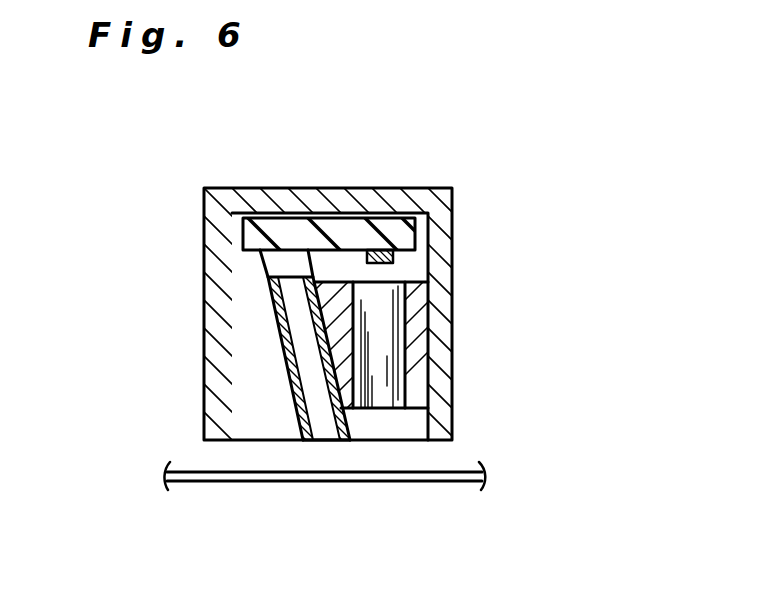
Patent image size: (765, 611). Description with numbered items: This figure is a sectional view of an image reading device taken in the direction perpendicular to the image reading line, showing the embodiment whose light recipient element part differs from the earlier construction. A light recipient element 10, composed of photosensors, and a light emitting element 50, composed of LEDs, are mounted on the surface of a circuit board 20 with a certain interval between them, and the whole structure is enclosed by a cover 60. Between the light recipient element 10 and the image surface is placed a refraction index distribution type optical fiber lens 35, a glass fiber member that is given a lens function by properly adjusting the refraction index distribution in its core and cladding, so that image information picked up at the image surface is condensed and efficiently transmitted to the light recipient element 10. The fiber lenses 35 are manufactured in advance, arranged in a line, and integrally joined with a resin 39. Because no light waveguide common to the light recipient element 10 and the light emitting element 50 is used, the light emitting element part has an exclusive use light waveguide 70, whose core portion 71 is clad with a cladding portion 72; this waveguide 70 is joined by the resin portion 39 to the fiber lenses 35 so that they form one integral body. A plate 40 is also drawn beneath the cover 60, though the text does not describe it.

The light recipient element 10 is at (382, 264).
The circuit board 20 is at (337, 233).
The refraction index distribution type optical fiber lens 35 is at (380, 325).
The resin 39 is at (415, 363).
The base plate 40 is at (455, 472).
The light emitting element 50 is at (275, 261).
The cover 60 is at (455, 228).
The exclusive use light waveguide 70 is at (280, 344).
The core portion 71 is at (323, 423).
The cladding portion 72 is at (293, 397).